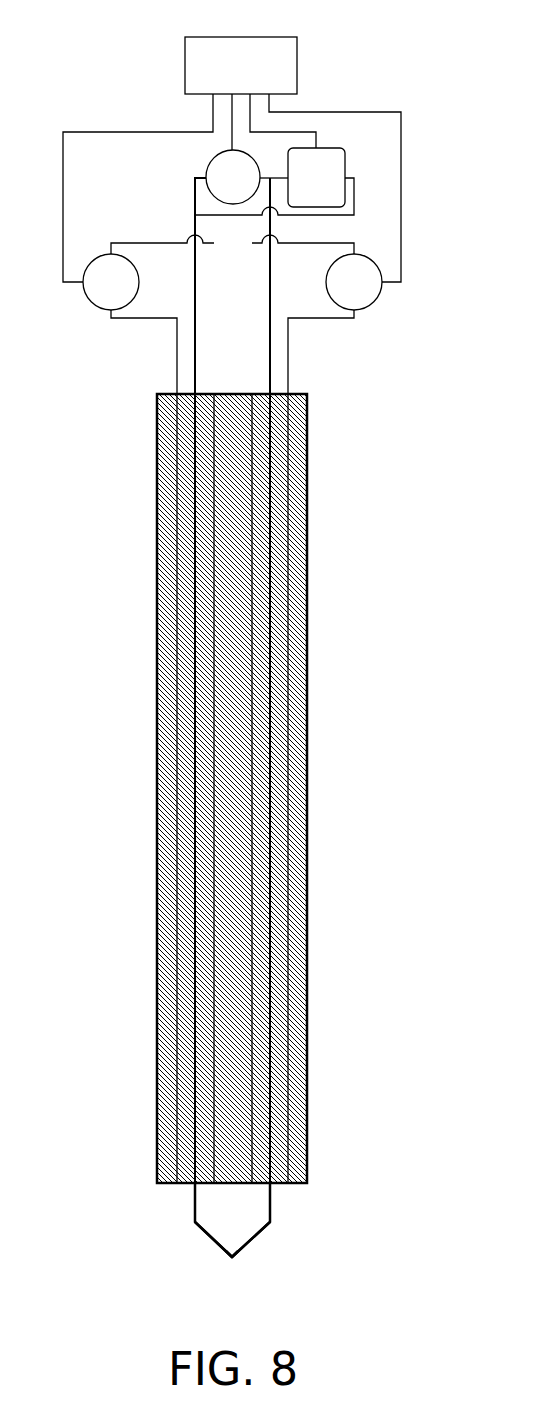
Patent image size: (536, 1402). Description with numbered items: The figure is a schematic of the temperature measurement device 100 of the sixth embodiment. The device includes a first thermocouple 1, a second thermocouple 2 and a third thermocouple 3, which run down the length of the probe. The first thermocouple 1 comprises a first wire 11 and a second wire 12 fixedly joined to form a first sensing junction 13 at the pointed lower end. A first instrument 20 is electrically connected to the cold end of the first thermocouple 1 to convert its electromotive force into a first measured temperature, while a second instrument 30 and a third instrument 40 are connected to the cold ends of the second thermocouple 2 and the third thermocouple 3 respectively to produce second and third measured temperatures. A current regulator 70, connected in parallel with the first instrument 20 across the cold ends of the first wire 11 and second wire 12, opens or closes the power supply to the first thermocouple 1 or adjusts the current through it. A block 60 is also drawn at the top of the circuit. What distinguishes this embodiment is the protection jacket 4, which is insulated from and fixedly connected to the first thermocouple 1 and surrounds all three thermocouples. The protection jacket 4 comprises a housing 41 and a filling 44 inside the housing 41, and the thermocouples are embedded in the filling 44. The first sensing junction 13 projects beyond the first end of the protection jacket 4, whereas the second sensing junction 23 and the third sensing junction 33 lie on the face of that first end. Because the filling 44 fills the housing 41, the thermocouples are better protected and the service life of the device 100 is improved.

The temperature measurement device 100 is at (137, 42).
The controller 60 is at (260, 65).
The first instrument 20 is at (218, 178).
The current regulator 70 is at (310, 178).
The second instrument 30 is at (109, 272).
The third instrument 40 is at (354, 272).
The first thermocouple 1 is at (193, 222).
The second thermocouple 2 is at (165, 319).
The third thermocouple 3 is at (302, 319).
The protection jacket 4 is at (272, 811).
The housing 41 is at (307, 713).
The filling 44 is at (253, 1012).
The second sensing junction 23 is at (190, 1186).
The third sensing junction 33 is at (275, 1186).
The first wire 11 is at (208, 1237).
The second wire 12 is at (255, 1240).
The first sensing junction 13 is at (235, 1260).